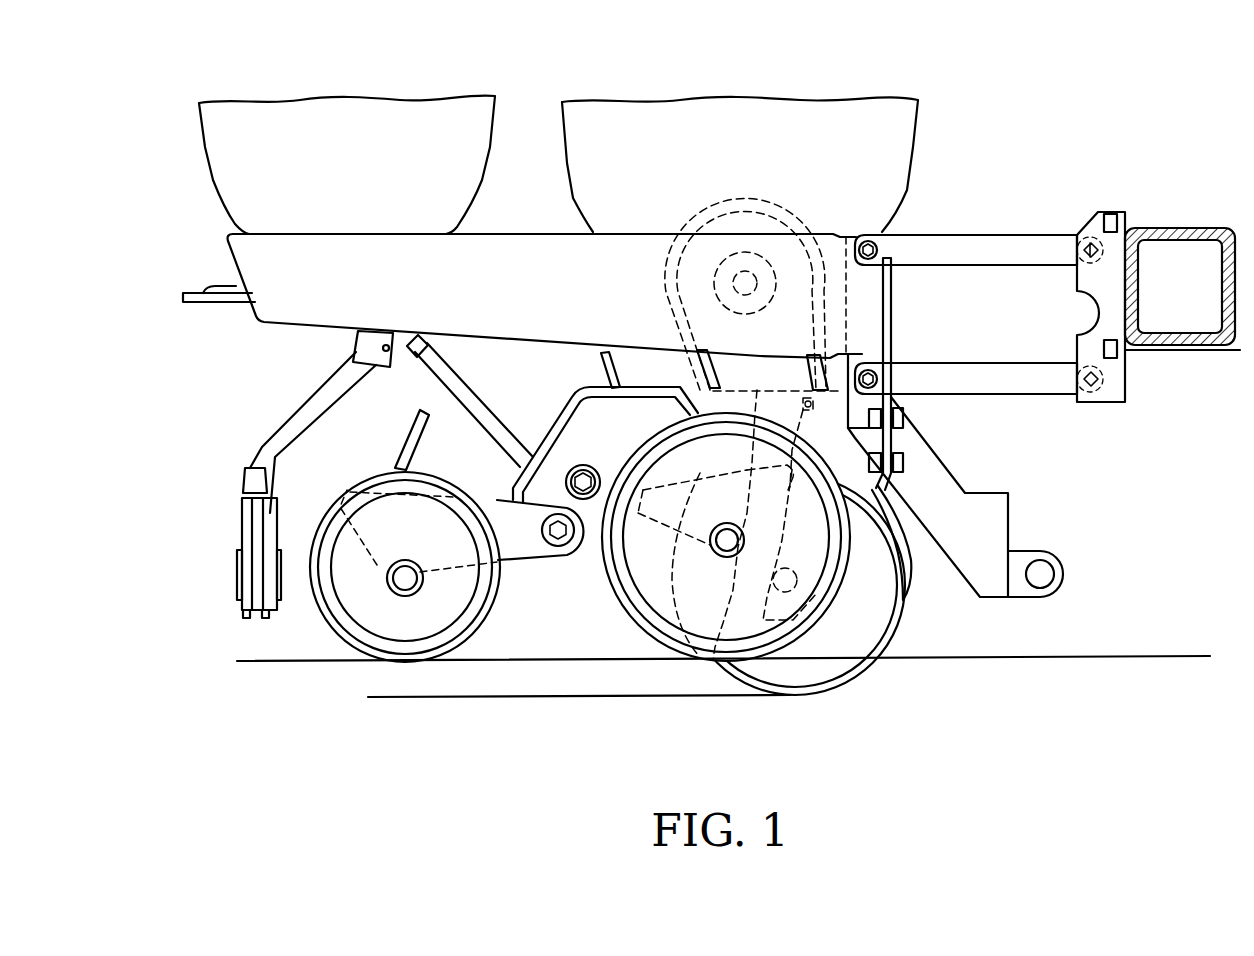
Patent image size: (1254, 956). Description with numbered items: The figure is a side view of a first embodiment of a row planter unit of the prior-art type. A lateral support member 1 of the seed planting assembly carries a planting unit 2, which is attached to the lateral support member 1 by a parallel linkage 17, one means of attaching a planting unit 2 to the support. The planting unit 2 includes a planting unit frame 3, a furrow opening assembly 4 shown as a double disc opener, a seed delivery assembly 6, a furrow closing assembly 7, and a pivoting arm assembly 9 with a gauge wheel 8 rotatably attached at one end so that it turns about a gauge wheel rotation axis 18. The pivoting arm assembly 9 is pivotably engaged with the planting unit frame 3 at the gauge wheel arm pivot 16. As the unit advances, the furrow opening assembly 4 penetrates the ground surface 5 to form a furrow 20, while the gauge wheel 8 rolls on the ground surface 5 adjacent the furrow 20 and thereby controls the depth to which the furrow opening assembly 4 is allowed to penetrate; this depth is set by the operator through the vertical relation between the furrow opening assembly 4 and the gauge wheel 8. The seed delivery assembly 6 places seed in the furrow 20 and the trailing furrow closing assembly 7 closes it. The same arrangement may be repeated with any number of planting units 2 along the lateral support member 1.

The lateral support member 1 is at (1174, 226).
The planting unit 2 is at (1068, 137).
The planting unit frame 3 is at (818, 436).
The furrow opening assembly 4 is at (854, 676).
The ground surface 5 is at (1160, 655).
The seed delivery assembly 6 is at (660, 263).
The furrow closing assembly 7 is at (482, 627).
The gauge wheel 8 is at (630, 599).
The pivoting arm assembly 9 is at (690, 506).
The gauge wheel arm pivot 16 is at (606, 460).
The parallel linkage 17 is at (992, 246).
The gauge wheel rotation axis 18 is at (727, 536).
The furrow 20 is at (684, 676).